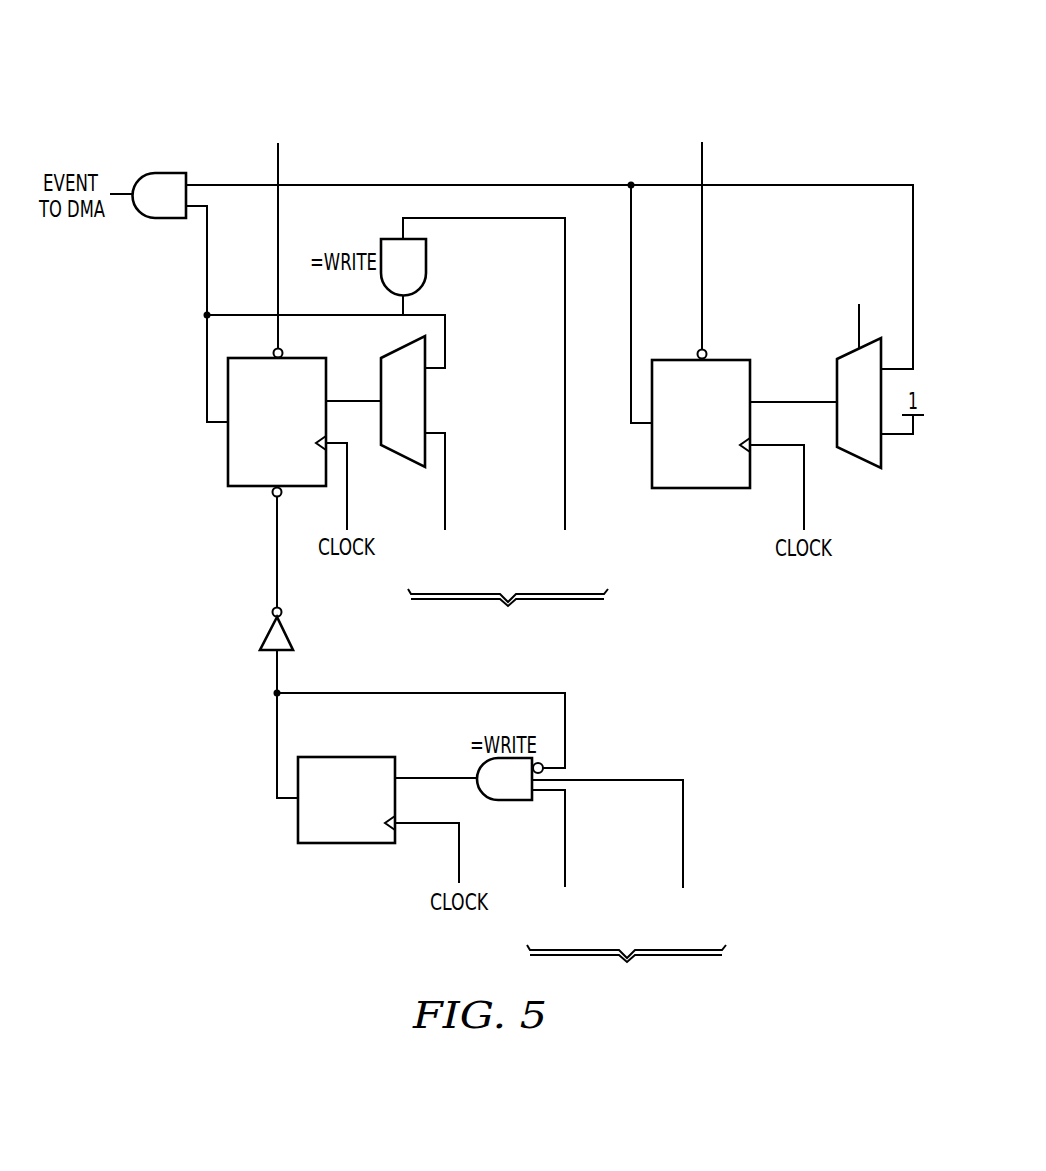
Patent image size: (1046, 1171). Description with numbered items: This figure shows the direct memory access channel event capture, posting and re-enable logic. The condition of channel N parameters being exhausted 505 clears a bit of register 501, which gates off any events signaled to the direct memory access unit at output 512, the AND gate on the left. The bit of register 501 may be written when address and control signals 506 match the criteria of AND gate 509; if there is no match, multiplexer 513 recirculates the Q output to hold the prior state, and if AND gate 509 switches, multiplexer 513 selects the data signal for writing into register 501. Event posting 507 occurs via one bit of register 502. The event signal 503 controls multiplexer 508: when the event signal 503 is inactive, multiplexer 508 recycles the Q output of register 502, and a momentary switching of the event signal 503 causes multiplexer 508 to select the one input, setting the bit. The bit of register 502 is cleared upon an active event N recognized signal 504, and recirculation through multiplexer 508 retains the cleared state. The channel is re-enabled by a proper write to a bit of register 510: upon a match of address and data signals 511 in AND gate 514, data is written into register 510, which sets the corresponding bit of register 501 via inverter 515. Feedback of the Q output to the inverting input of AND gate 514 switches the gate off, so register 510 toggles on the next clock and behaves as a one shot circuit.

The register 501 is at (226, 450).
The register 502 is at (727, 356).
The event signal 503 is at (860, 278).
The event N recognized signal 504 is at (703, 88).
The channel N parameters exhausted condition 505 is at (279, 58).
The address and control signals 506 is at (509, 582).
The event posting 507 is at (700, 573).
The multiplexer 508 is at (857, 461).
The AND gate 509 is at (428, 261).
The register 510 is at (345, 755).
The address and data signals 511 is at (627, 939).
The output 512 is at (165, 172).
The multiplexer 513 is at (400, 460).
The AND gate 514 is at (508, 805).
The inverter 515 is at (265, 635).